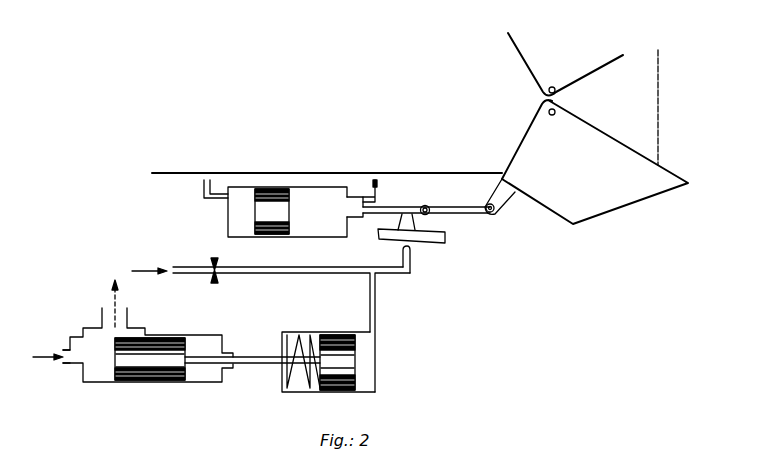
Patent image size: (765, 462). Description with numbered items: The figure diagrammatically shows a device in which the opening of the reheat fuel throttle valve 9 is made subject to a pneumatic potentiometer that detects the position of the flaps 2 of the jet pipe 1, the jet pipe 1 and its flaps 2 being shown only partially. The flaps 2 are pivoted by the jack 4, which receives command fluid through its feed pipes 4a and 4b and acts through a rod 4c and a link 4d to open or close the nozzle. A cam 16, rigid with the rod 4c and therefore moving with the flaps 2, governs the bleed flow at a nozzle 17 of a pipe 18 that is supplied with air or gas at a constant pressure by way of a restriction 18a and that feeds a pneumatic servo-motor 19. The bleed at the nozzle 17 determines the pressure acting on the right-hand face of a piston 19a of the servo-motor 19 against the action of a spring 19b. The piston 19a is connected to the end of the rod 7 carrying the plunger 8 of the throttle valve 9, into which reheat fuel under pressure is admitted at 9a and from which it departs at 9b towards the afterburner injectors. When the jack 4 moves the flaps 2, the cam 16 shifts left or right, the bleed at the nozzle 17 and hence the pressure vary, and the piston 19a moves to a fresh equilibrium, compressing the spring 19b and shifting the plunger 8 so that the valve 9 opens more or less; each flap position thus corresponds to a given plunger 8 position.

The jet pipe 1 is at (463, 172).
The flaps 2 is at (573, 70).
The jack 4 is at (242, 187).
The feed pipe 4a is at (376, 185).
The feed pipe 4b is at (203, 190).
The rod 4c is at (405, 205).
The link 4d is at (457, 208).
The rod 7 is at (247, 364).
The plunger 8 is at (147, 372).
The reheat fuel throttle valve 9 is at (98, 382).
The fuel inlet 9a is at (70, 347).
The fuel outlet 9b is at (102, 318).
The cam 16 is at (435, 243).
The nozzle 17 is at (401, 246).
The pipe 18 is at (270, 274).
The restriction 18a is at (212, 262).
The pneumatic servo-motor 19 is at (348, 393).
The piston 19a is at (333, 391).
The spring 19b is at (296, 388).